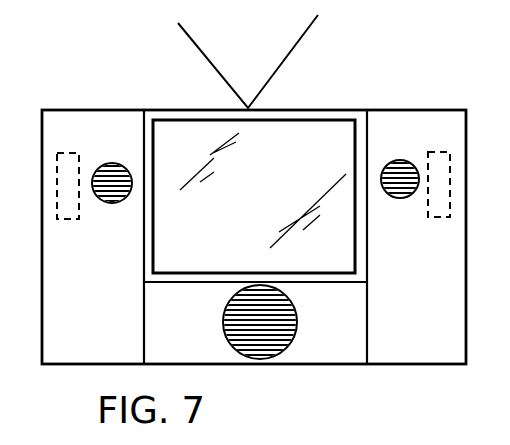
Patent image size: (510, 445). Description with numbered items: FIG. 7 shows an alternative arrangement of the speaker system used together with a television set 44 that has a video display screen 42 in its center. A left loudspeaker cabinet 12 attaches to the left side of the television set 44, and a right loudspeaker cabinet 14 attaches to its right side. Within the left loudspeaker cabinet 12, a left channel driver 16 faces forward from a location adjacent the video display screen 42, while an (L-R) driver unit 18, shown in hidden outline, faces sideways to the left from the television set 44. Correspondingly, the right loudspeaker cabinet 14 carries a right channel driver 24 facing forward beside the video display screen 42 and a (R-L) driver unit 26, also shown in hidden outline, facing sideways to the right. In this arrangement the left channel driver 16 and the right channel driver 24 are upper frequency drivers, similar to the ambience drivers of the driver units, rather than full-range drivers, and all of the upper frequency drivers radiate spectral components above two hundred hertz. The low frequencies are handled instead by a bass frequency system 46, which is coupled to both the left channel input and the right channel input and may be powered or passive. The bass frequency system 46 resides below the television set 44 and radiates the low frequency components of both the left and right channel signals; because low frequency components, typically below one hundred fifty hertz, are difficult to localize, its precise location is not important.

The left loudspeaker cabinet 12 is at (65, 109).
The right loudspeaker cabinet 14 is at (436, 109).
The left channel driver 16 is at (110, 163).
The (L-R) driver unit 18 is at (48, 166).
The right channel driver 24 is at (398, 160).
The (R-L) driver unit 26 is at (456, 159).
The video display screen 42 is at (351, 119).
The television set 44 is at (309, 109).
The bass frequency system 46 is at (296, 311).